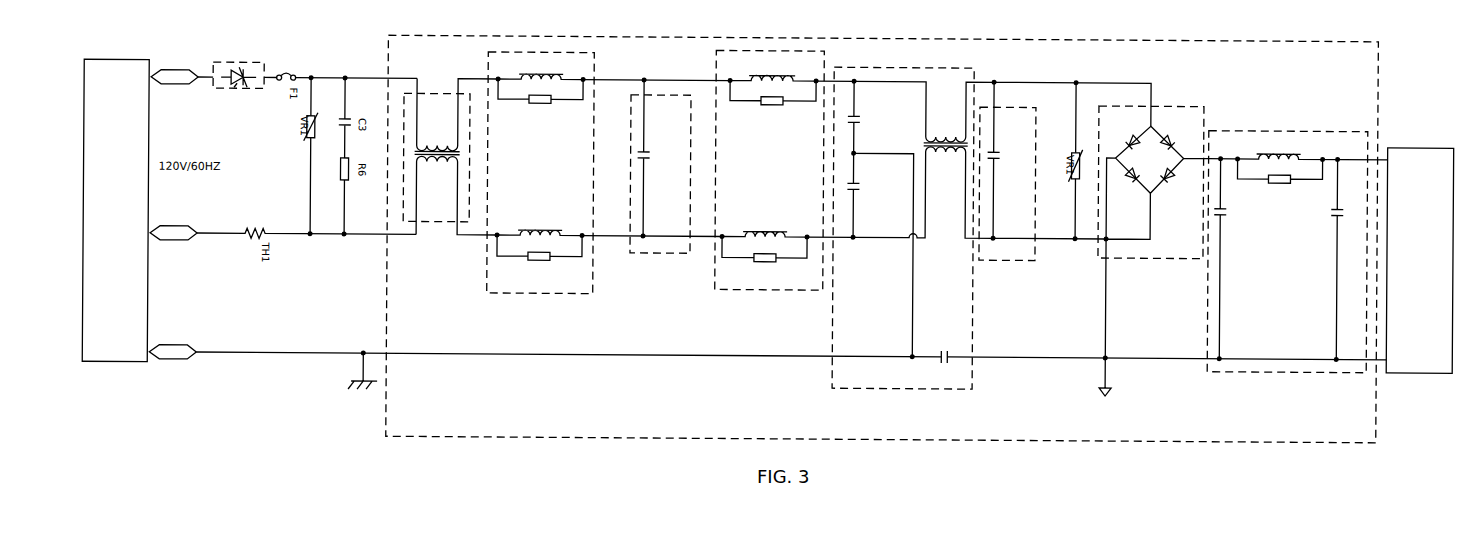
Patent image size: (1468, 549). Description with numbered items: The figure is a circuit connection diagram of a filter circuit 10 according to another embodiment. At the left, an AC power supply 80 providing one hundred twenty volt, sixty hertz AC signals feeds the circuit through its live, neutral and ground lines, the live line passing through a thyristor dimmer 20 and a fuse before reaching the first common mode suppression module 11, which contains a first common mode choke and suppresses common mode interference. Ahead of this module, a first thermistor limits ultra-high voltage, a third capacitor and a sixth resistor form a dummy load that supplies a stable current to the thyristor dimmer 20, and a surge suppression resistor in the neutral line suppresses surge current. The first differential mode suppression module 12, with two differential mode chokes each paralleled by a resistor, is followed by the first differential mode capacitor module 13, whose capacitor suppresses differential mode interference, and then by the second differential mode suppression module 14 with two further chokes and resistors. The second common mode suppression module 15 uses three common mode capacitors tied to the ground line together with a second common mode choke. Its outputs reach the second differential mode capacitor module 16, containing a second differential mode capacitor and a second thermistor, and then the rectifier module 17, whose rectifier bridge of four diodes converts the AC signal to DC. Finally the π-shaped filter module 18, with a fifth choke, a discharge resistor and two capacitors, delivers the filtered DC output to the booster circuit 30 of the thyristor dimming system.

The AC power supply 80 is at (113, 366).
The thyristor dimmer 20 is at (233, 92).
The filter circuit 10 is at (883, 439).
The first common mode suppression module 11 is at (432, 224).
The first differential mode suppression module 12 is at (538, 295).
The first differential mode capacitor module 13 is at (657, 254).
The second differential mode suppression module 14 is at (765, 290).
The second common mode suppression module 15 is at (903, 388).
The second differential mode capacitor module 16 is at (1010, 259).
The rectifier module 17 is at (1150, 256).
The π-shaped filter module 18 is at (1288, 369).
The booster circuit 30 is at (1420, 369).